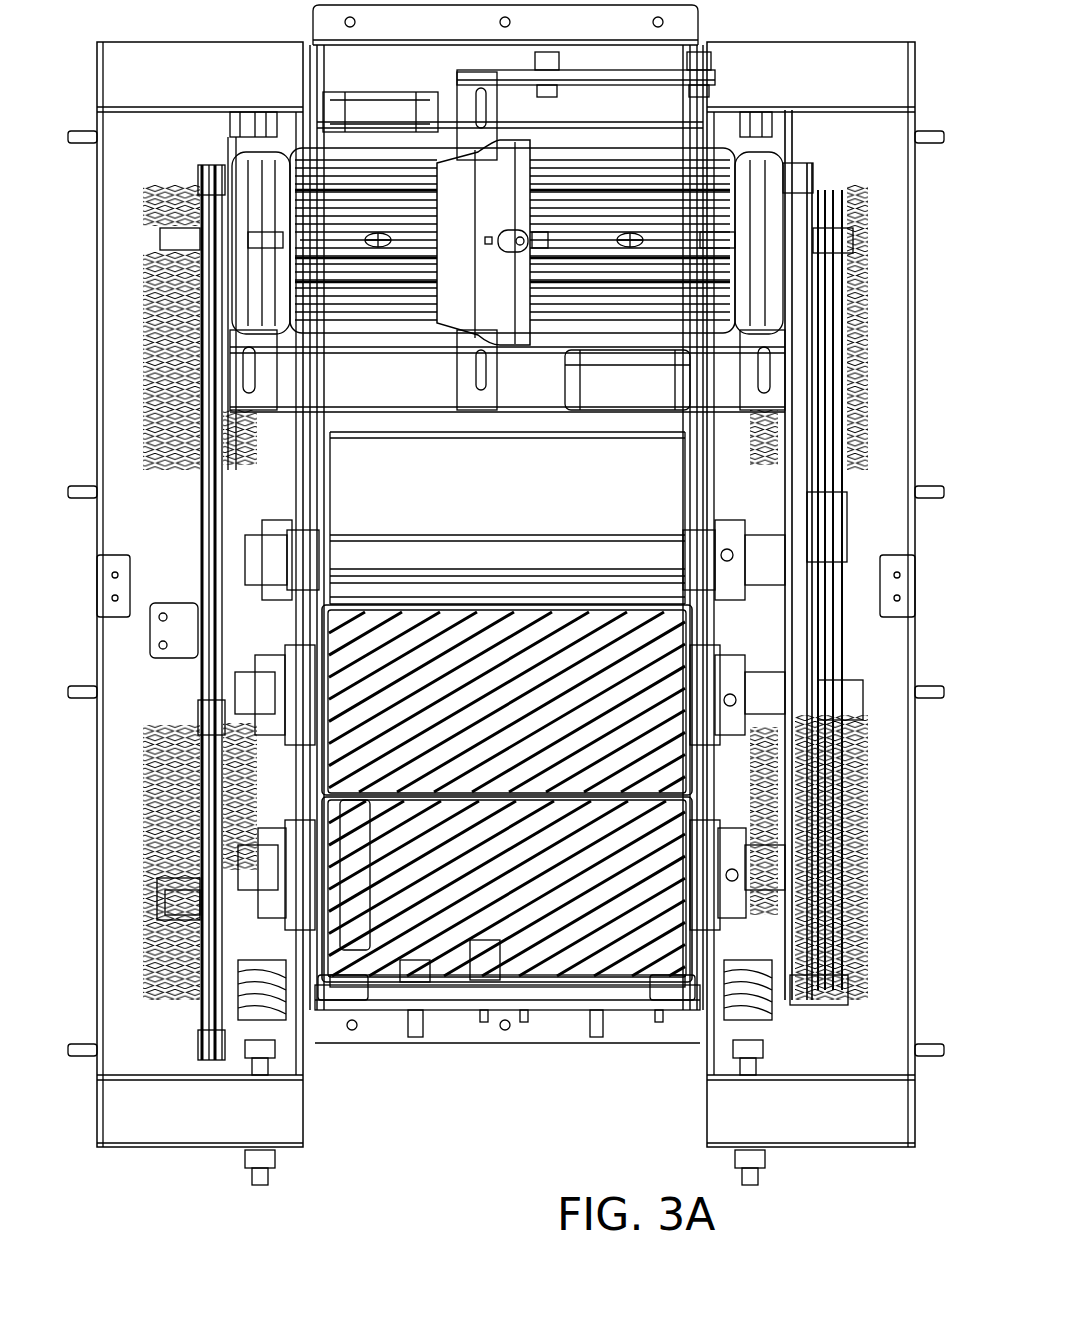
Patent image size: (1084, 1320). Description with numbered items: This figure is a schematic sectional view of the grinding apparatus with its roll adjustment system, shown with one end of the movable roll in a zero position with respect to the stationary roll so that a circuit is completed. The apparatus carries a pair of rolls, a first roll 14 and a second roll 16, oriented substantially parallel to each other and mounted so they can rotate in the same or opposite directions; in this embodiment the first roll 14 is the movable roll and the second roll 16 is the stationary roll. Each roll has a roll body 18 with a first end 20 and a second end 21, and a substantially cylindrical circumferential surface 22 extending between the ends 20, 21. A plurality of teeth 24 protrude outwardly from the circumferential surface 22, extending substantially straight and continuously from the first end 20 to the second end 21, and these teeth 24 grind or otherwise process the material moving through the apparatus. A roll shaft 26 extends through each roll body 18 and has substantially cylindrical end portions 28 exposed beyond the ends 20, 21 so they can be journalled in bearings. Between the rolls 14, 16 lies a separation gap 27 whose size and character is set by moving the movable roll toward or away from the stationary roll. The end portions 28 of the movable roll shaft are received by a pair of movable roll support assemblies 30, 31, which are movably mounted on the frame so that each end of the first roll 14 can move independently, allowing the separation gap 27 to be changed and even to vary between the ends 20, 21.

The first roll 14 is at (650, 847).
The second roll 16 is at (655, 700).
The roll body 18 is at (572, 940).
The first end 20 is at (330, 978).
The second end 21 is at (677, 950).
The circumferential surface 22 is at (413, 965).
The teeth 24 is at (476, 938).
The roll shaft 26 is at (155, 890).
The separation gap 27 is at (368, 800).
The end portions 28 is at (170, 899).
The movable roll support assembly 30 is at (182, 1040).
The movable roll support assembly 31 is at (798, 1027).